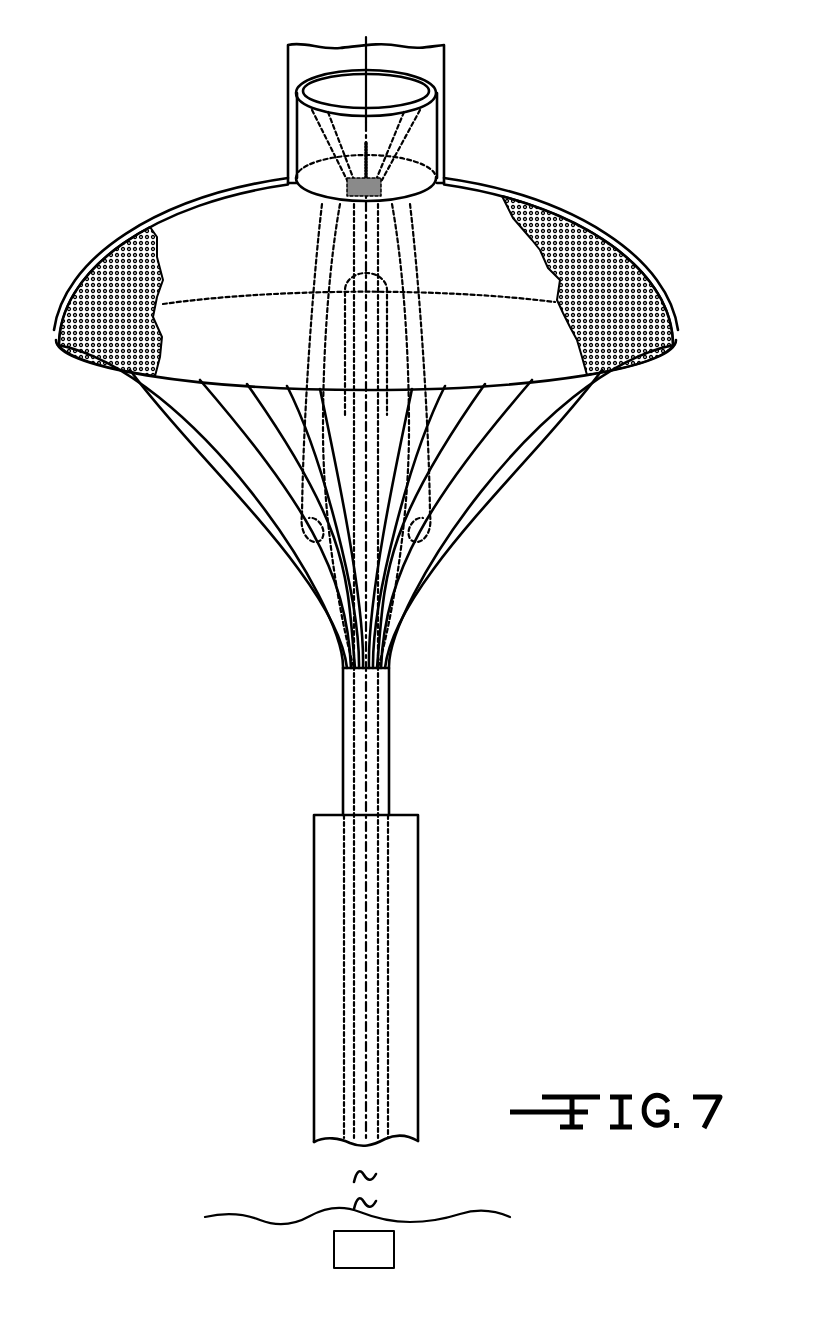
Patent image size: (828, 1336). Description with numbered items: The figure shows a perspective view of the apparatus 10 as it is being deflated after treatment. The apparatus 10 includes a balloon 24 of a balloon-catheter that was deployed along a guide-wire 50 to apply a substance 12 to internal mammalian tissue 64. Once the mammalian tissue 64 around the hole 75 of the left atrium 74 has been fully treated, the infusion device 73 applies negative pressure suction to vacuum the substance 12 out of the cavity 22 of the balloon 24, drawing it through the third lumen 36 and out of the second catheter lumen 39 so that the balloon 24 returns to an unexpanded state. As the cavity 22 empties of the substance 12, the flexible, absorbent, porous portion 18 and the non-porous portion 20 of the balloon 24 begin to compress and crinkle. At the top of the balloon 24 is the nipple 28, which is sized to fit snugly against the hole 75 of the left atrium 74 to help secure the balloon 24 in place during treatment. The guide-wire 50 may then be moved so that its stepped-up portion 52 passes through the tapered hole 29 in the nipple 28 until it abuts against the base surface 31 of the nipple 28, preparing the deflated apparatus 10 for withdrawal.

The apparatus 10 is at (455, 695).
The substance 12 is at (375, 1177).
The flexible, absorbent, porous portion 18 is at (627, 247).
The non-porous portion 20 is at (517, 460).
The cavity 22 is at (472, 275).
The balloon 24 is at (610, 393).
The nipple 28 is at (445, 80).
The tapered hole 29 is at (336, 134).
The base surface 31 is at (381, 192).
The third lumen 36 is at (385, 375).
The second catheter lumen 39 is at (380, 927).
The guide-wire 50 is at (368, 60).
The stepped-up portion 52 is at (372, 182).
The internal mammalian tissue 64 is at (475, 177).
The infusion device 73 is at (364, 1249).
The left atrium 74 is at (172, 237).
The hole 75 is at (300, 168).